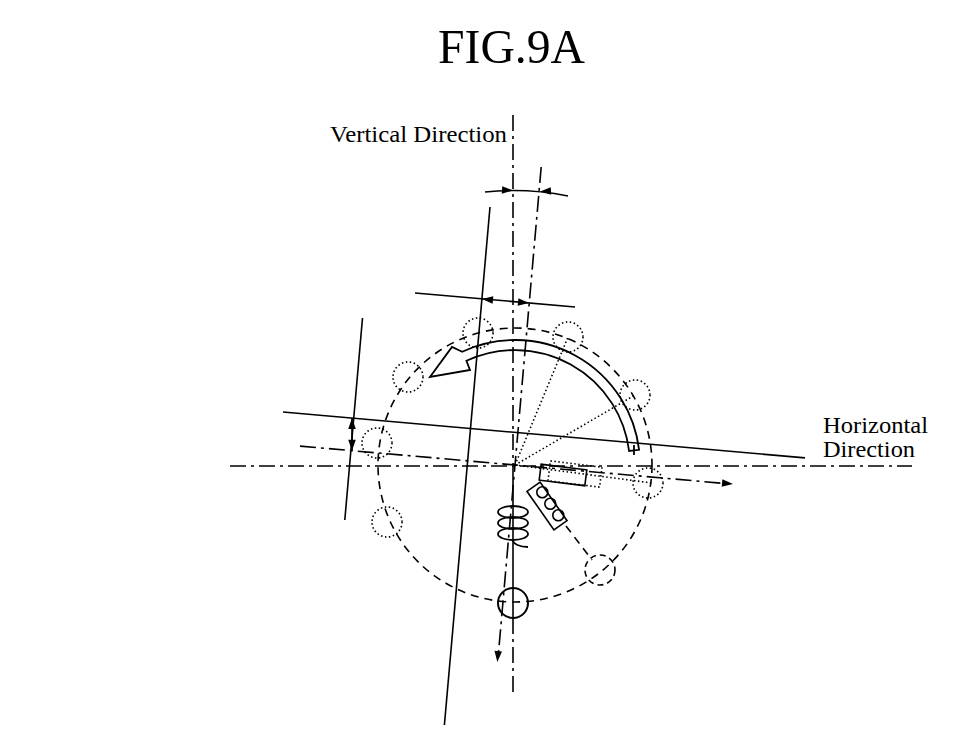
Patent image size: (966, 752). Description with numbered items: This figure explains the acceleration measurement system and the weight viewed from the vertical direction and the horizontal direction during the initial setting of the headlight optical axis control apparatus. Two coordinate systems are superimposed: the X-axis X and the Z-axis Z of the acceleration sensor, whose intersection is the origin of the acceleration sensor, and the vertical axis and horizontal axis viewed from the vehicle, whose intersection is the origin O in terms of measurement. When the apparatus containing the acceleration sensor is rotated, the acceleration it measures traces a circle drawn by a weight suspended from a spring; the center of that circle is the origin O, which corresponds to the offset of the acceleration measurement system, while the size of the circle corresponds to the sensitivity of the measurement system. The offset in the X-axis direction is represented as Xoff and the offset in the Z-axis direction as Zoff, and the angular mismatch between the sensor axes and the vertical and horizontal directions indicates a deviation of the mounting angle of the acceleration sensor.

The Z-axis Z is at (467, 461).
The X-axis X is at (544, 436).
The origin O is at (503, 541).
The offset in the Z-axis direction Zoff is at (345, 439).
The offset in the X-axis direction Xoff is at (502, 294).